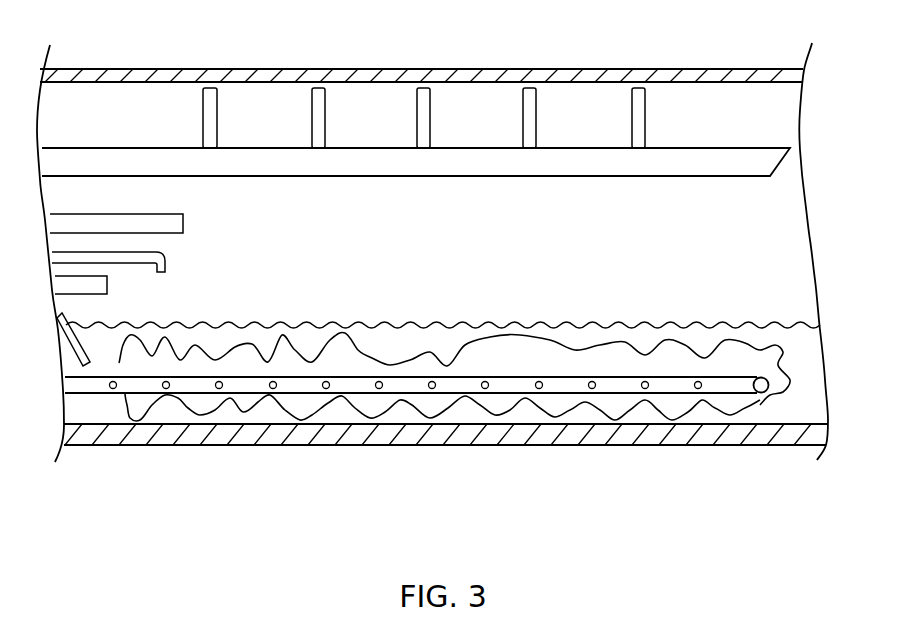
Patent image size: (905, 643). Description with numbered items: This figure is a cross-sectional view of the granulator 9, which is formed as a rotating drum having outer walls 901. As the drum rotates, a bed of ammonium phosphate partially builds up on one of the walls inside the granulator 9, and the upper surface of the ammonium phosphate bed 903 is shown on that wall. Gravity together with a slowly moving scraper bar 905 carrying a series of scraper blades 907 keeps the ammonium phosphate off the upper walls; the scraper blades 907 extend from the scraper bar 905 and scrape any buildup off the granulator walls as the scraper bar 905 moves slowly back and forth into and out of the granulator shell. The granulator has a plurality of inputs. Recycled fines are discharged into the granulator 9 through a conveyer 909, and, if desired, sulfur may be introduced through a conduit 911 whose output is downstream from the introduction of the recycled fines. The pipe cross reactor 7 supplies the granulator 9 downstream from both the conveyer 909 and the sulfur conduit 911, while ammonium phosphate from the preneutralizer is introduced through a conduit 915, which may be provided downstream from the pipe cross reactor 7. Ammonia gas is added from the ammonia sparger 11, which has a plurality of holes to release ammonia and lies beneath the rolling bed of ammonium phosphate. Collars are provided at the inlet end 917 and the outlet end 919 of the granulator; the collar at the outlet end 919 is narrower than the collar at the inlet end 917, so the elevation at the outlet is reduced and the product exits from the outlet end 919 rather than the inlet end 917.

The granulator 9 is at (400, 483).
The ammonia sparger 11 is at (358, 385).
The pipe cross reactor 7 is at (168, 266).
The outer walls 901 is at (441, 68).
The upper surface of the ammonium phosphate bed 903 is at (508, 322).
The scraper bar 905 is at (414, 177).
The scraper blades 907 is at (217, 106).
The conveyer 909 is at (77, 345).
The conduit 911 is at (107, 289).
The conduit 915 is at (183, 222).
The inlet end 917 is at (36, 232).
The outlet end 919 is at (859, 232).